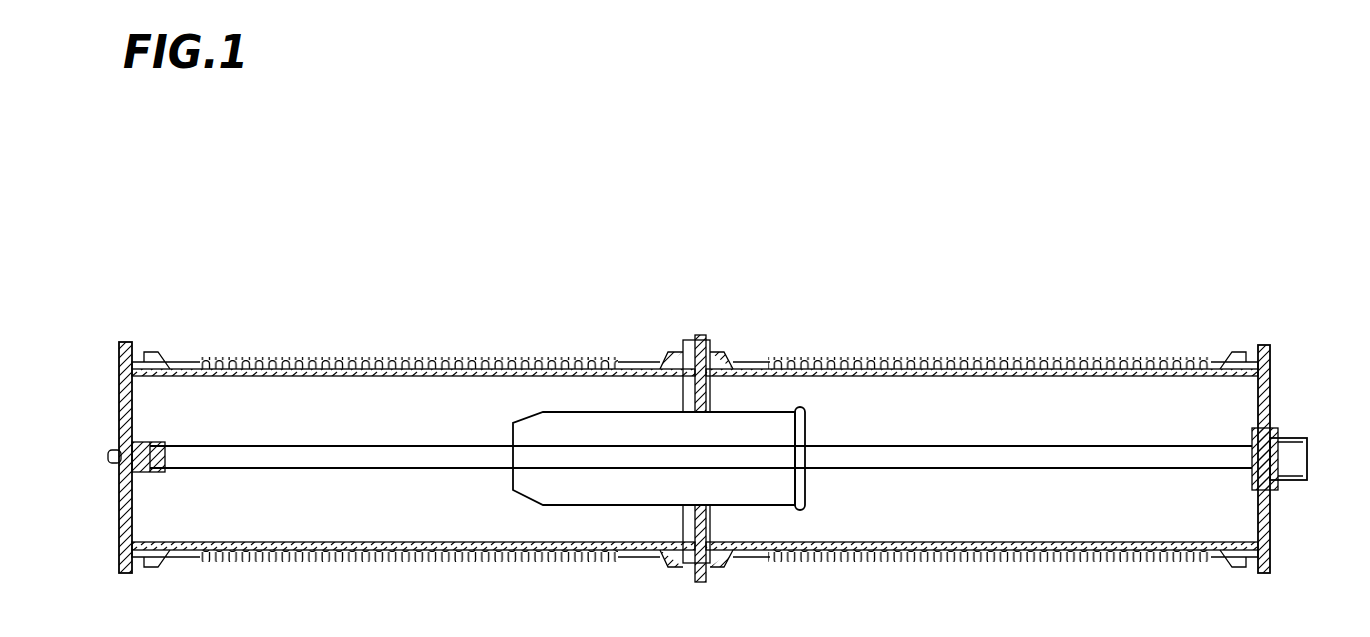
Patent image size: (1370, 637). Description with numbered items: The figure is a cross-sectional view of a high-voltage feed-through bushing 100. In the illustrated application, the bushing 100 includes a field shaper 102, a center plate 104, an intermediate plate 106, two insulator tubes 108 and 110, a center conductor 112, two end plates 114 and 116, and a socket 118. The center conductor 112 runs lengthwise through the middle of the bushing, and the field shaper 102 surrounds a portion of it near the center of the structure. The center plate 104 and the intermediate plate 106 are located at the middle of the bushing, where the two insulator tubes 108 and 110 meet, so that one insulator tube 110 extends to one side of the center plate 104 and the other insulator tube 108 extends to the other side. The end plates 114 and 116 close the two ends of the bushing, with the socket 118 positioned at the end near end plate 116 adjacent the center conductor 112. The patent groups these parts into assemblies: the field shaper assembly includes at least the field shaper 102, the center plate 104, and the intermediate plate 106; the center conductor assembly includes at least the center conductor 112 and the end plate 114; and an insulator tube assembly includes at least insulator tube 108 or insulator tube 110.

The high-voltage feed-through bushing 100 is at (352, 263).
The field shaper 102 is at (788, 410).
The center plate 104 is at (697, 338).
The intermediate plate 106 is at (707, 345).
The insulator tube 108 is at (1088, 357).
The insulator tube 110 is at (466, 357).
The center conductor 112 is at (1128, 446).
The end plate 114 is at (1268, 402).
The end plate 116 is at (119, 418).
The socket 118 is at (165, 470).